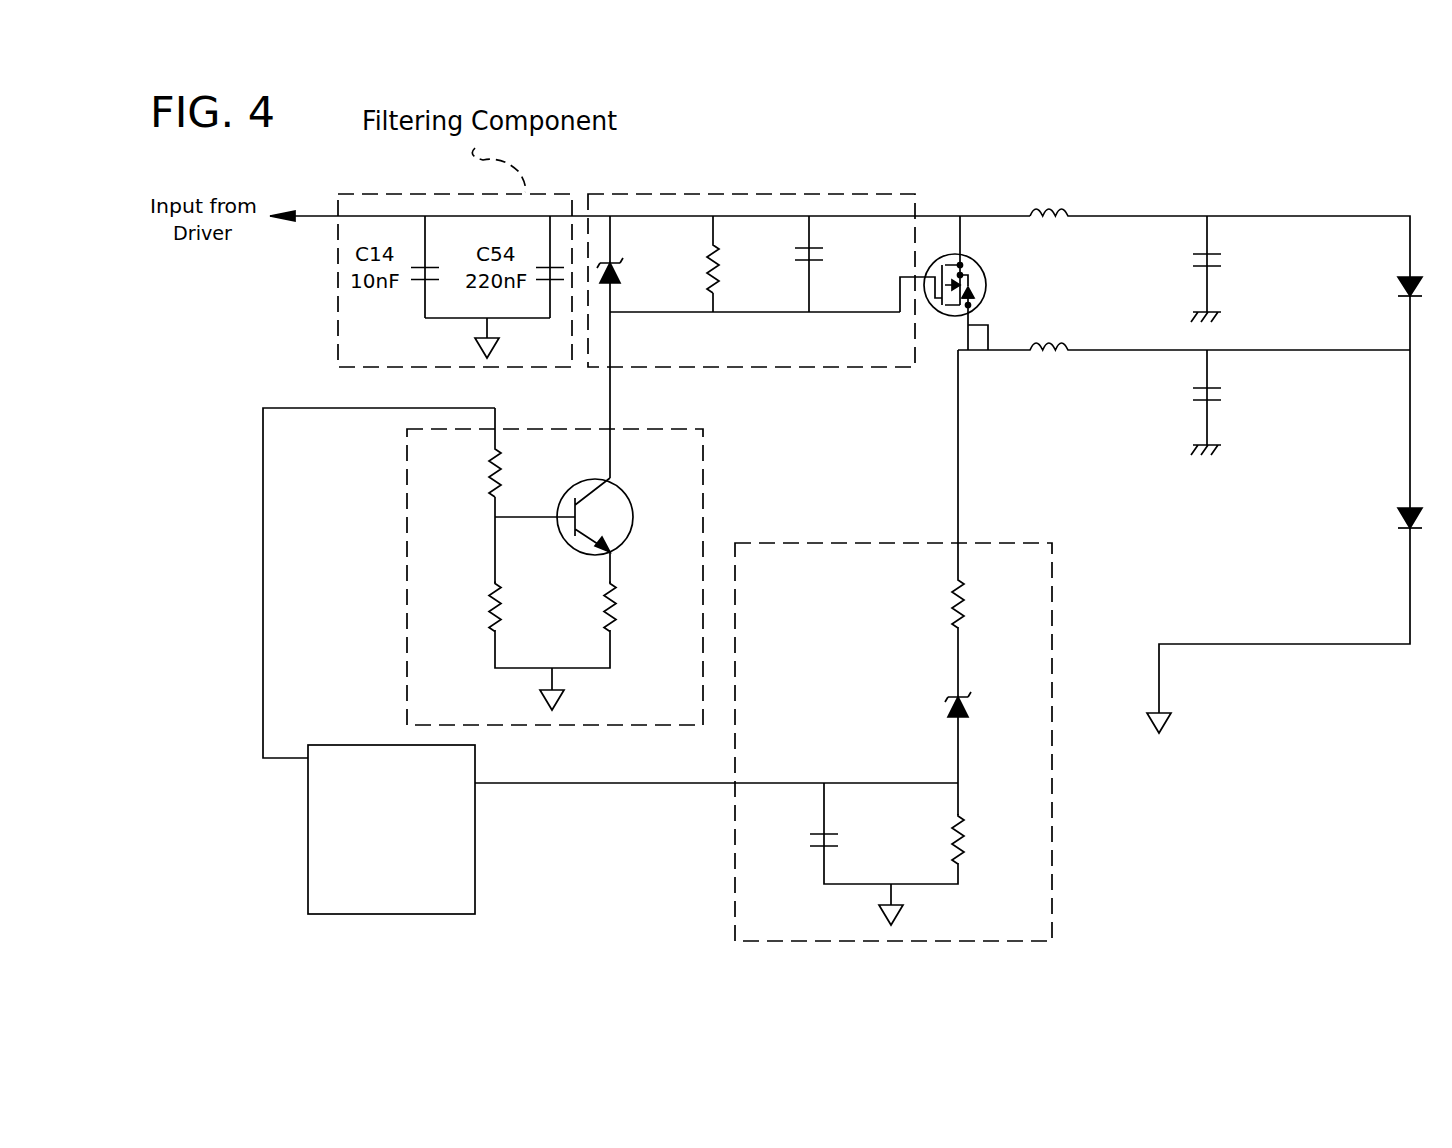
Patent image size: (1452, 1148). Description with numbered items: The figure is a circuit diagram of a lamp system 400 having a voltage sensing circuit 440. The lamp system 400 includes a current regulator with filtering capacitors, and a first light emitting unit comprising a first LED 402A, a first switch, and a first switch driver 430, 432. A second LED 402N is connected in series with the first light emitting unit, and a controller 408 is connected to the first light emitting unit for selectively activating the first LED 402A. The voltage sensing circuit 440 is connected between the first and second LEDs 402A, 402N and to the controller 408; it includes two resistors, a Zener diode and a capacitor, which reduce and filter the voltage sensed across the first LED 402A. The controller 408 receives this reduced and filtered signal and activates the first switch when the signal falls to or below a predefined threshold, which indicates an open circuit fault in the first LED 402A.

The lamp system 400 is at (1367, 173).
The first LED 402A is at (1406, 280).
The second LED 402N is at (1400, 502).
The controller 408 is at (308, 860).
The first switch driver 430 is at (832, 192).
The first switch driver 432 is at (704, 458).
The voltage sensing circuit 440 is at (1052, 877).